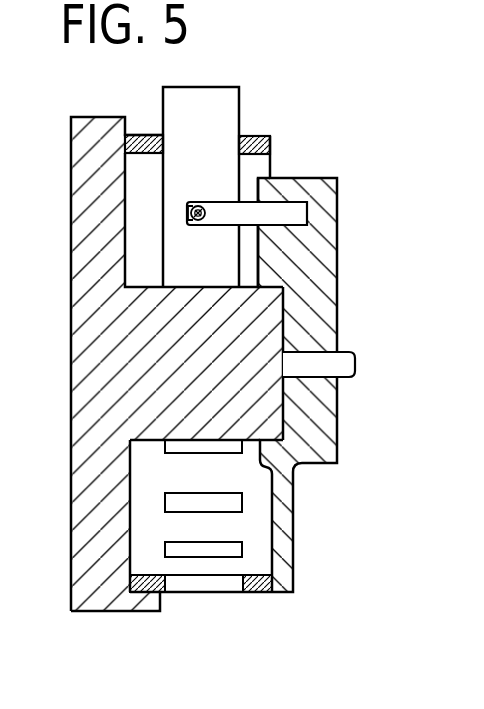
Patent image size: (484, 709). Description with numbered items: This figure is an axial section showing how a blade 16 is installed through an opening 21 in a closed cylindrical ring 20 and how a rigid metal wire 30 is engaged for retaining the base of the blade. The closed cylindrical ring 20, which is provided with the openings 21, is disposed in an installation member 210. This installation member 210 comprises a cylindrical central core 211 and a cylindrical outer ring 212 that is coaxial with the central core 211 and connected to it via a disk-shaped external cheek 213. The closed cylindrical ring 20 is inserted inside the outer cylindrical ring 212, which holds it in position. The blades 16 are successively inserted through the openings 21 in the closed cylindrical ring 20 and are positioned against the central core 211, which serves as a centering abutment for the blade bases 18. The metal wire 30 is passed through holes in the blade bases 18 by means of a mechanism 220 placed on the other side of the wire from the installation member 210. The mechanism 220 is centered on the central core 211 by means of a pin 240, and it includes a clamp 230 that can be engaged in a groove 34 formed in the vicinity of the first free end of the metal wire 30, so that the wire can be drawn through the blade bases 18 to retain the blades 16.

The blade 16 is at (226, 102).
The blade base 18 is at (176, 266).
The closed cylindrical ring 20 is at (270, 137).
The opening 21 is at (213, 548).
The metal wire 30 is at (193, 208).
The groove 34 is at (186, 218).
The installation member 210 is at (113, 345).
The cylindrical central core 211 is at (220, 403).
The cylindrical outer ring 212 is at (143, 598).
The disk-shaped external cheek 213 is at (95, 520).
The mechanism 220 is at (320, 234).
The clamp 230 is at (214, 203).
The pin 240 is at (323, 363).